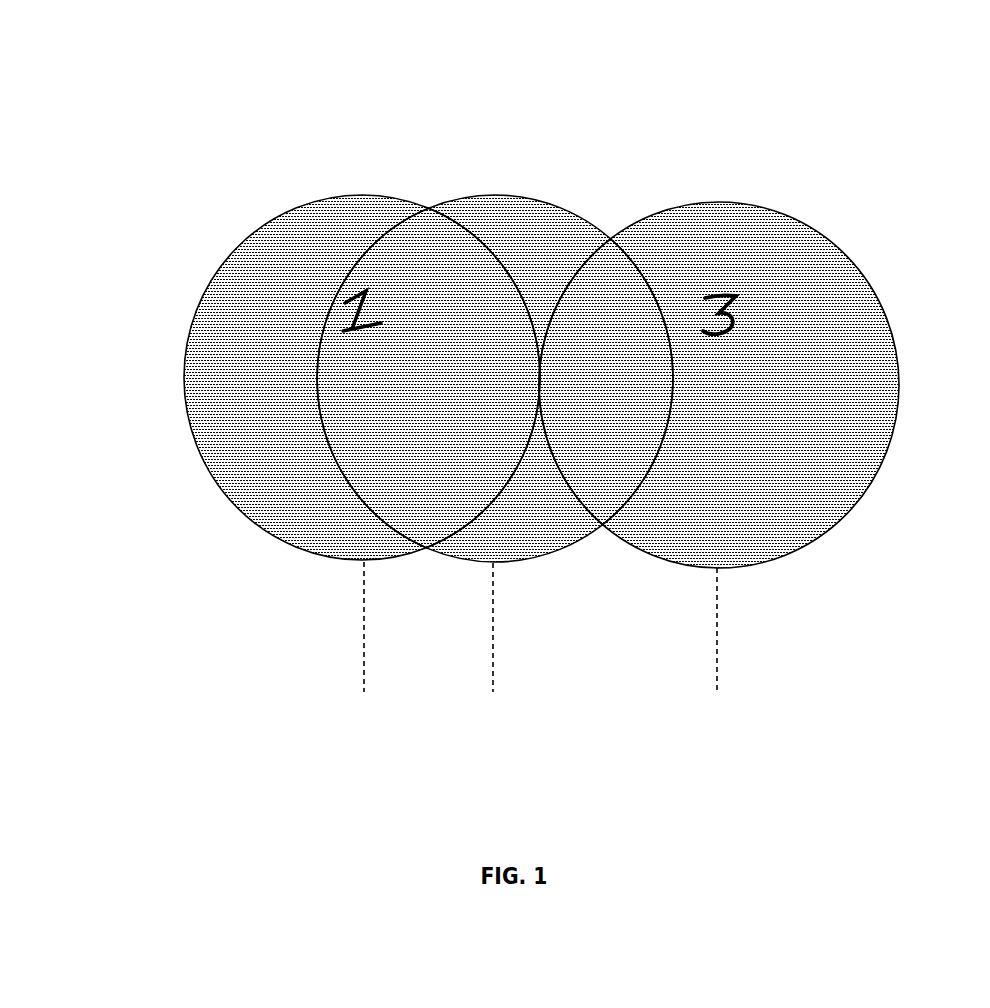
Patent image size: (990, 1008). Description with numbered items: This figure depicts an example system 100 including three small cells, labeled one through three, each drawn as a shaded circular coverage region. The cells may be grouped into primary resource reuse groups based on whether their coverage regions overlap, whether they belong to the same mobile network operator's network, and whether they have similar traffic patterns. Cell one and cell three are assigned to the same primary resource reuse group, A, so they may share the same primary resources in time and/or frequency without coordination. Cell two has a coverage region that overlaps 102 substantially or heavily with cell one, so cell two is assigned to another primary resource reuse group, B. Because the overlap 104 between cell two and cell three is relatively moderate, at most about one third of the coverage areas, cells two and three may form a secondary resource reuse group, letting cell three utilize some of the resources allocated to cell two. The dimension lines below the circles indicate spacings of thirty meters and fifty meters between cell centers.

The system 100 is at (513, 56).
The overlap 102 is at (428, 377).
The overlap 104 is at (606, 382).